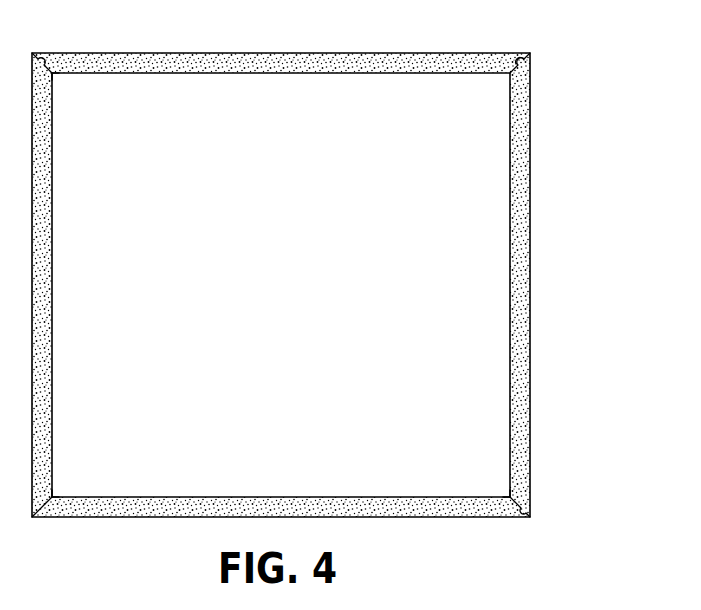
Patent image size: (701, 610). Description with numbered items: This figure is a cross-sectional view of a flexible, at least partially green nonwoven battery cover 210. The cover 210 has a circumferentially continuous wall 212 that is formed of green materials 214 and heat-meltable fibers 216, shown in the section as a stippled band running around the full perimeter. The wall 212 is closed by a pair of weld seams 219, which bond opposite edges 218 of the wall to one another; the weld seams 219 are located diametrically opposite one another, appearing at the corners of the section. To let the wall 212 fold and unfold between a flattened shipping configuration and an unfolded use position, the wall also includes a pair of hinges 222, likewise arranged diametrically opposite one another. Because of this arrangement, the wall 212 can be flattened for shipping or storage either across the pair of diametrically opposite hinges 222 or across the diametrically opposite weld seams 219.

The cover 210 is at (351, 275).
The circumferentially continuous wall 212 is at (531, 258).
The green materials 214 is at (531, 298).
The heat-meltable fibers 216 is at (531, 338).
The opposite edges 218 is at (530, 60).
The weld seams 219 is at (515, 70).
The hinges 222 is at (67, 92).